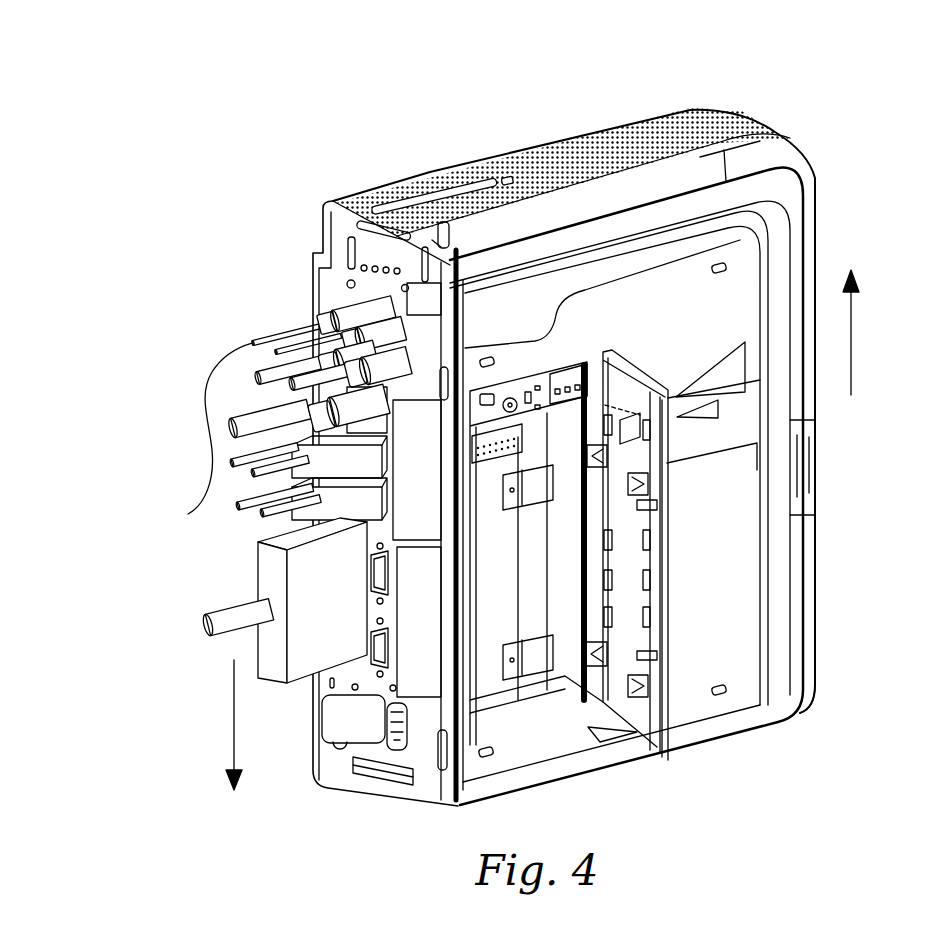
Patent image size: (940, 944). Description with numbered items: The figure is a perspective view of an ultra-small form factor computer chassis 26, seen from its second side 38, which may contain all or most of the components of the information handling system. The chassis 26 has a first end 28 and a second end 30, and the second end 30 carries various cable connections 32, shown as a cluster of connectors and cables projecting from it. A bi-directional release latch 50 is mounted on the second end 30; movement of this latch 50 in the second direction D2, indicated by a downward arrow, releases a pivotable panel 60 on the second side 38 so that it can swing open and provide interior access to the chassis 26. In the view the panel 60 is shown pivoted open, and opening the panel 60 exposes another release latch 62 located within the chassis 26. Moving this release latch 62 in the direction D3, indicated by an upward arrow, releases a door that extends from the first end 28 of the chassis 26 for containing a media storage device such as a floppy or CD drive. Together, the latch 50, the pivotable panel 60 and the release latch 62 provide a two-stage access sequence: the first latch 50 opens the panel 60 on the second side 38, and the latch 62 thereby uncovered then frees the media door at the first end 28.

The chassis 26 is at (688, 98).
The first end 28 is at (816, 600).
The second end 30 is at (325, 238).
The cable connections 32 is at (285, 489).
The second side 38 is at (795, 705).
The bi-directional release latch 50 is at (392, 750).
The pivotable panel 60 is at (640, 378).
The release latch 62 is at (560, 388).
The second direction D2 is at (231, 770).
The direction D3 is at (858, 283).